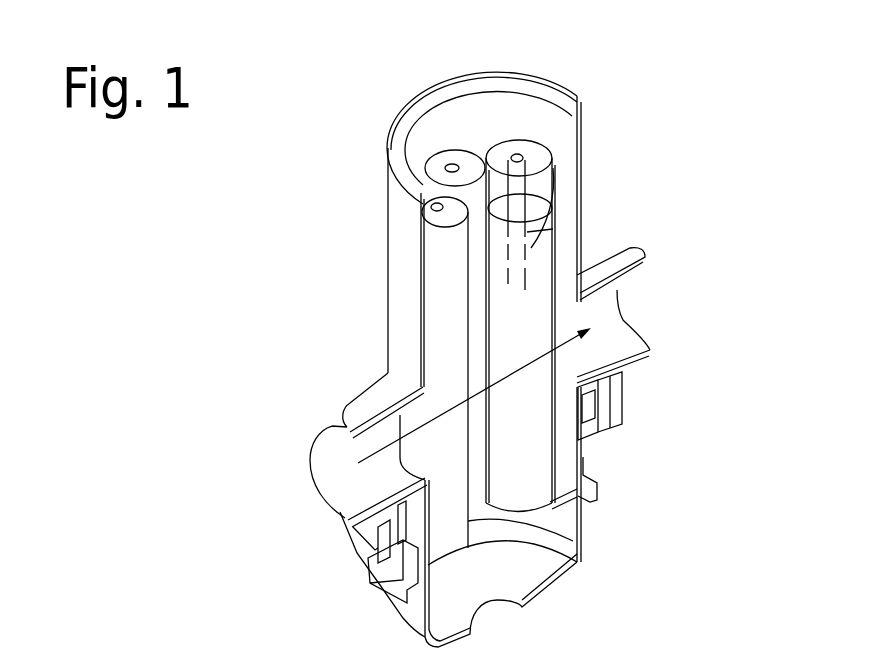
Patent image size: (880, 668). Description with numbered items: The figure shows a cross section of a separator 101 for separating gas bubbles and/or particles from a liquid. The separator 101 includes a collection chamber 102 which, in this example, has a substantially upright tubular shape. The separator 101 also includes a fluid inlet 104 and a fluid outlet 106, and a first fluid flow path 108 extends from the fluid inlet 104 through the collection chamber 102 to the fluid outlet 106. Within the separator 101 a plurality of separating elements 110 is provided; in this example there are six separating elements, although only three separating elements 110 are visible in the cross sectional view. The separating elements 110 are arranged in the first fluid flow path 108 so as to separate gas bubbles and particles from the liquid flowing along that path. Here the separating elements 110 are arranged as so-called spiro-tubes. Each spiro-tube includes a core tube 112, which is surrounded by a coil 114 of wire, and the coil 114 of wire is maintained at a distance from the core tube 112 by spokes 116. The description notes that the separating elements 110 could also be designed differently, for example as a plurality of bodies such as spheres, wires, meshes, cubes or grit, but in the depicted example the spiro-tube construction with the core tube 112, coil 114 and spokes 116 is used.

The separator 101 is at (631, 62).
The collection chamber 102 is at (410, 268).
The fluid inlet 104 is at (327, 500).
The fluid outlet 106 is at (623, 320).
The first fluid flow path 108 is at (545, 455).
The separating elements 110 is at (518, 152).
The core tube 112 is at (519, 157).
The coil of wire 114 is at (527, 228).
The spokes 116 is at (521, 160).